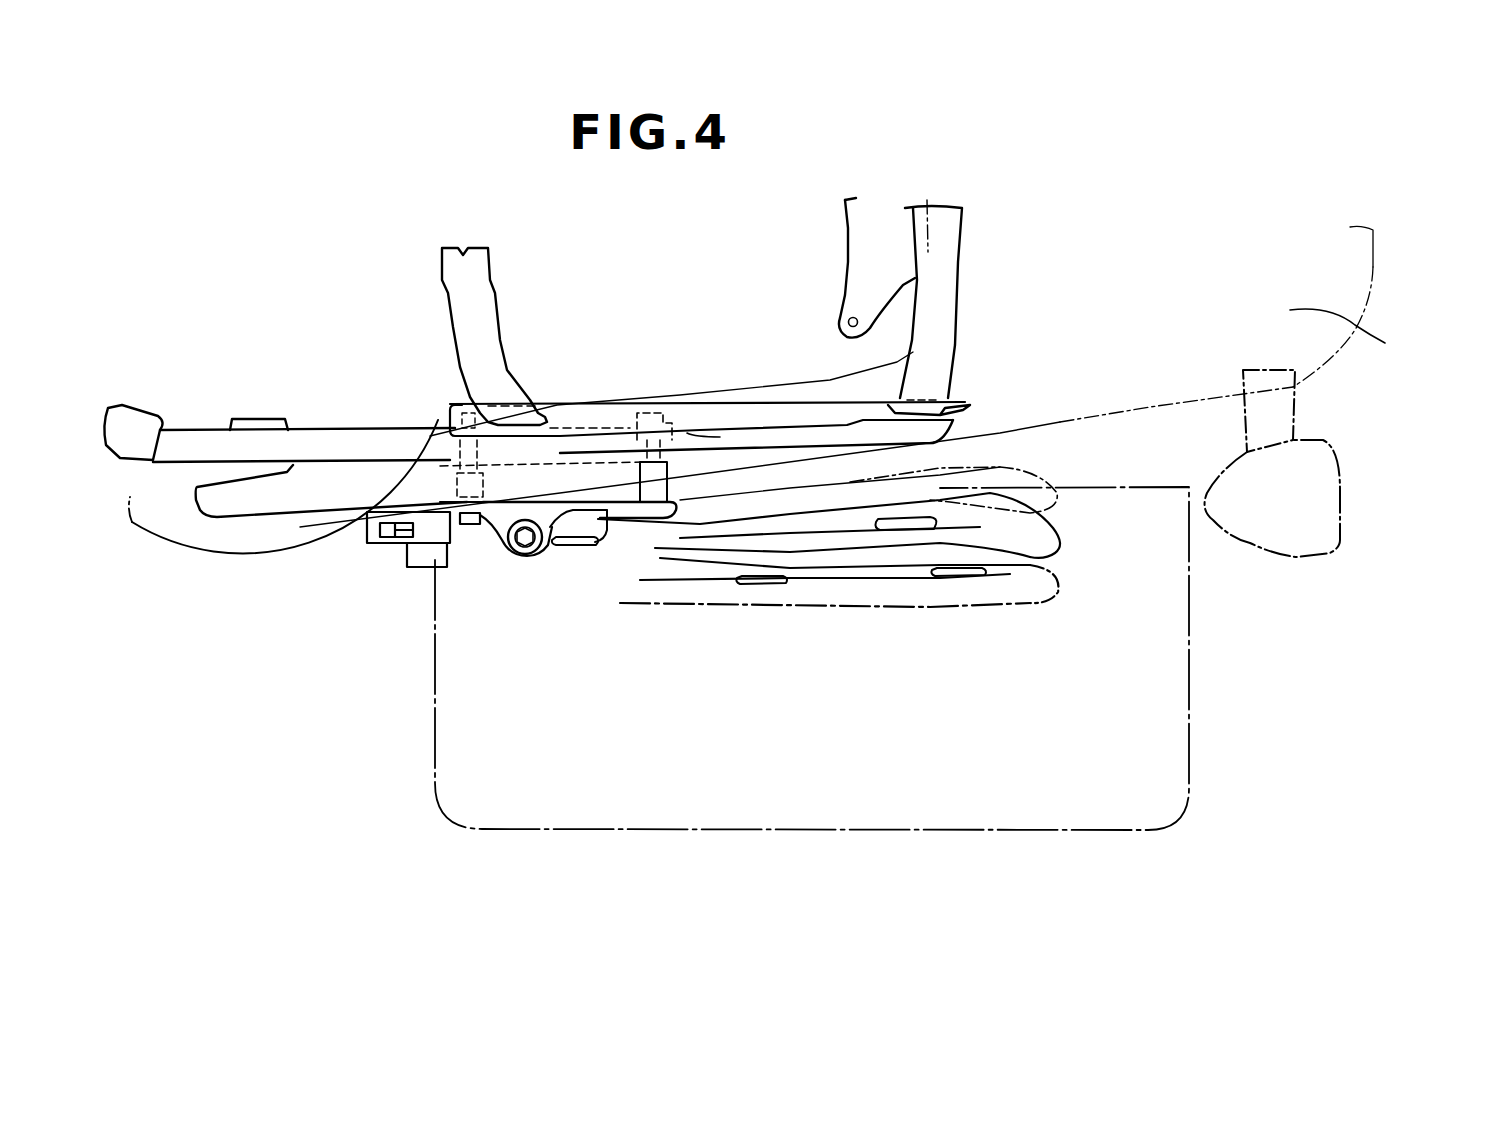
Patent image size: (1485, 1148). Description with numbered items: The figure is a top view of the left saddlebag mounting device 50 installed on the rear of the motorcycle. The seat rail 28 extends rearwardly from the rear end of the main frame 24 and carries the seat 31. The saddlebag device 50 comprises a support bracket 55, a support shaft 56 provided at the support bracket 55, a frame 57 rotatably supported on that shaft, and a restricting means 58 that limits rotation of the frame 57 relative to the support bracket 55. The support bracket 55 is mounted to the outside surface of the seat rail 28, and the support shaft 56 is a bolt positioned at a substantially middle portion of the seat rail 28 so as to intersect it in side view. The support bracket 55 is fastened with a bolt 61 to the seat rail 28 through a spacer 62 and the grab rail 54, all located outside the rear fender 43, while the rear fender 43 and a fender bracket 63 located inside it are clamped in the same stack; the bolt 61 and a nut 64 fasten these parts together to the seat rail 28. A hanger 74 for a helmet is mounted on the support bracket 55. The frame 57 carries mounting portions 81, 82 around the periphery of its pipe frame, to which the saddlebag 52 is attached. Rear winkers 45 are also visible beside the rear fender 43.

The main frame 24 is at (142, 410).
The seat rail 28 is at (522, 450).
The seat 31 is at (222, 562).
The rear fender 43 is at (1385, 343).
The rear winker 45 is at (1313, 513).
The saddlebag mounting device 50 is at (633, 670).
The saddlebag 52 is at (1191, 640).
The grab rail 54 is at (745, 447).
The support bracket 55 is at (667, 543).
The support shaft 56 is at (523, 556).
The frame 57 is at (697, 567).
The restricting means 58 is at (613, 548).
The bolt 61 is at (473, 538).
The spacer 62 is at (452, 475).
The fender bracket 63 is at (582, 440).
The nut 64 is at (460, 400).
The hanger 74 is at (372, 540).
The mounting portion 81 is at (583, 541).
The mounting portion 82 is at (933, 520).